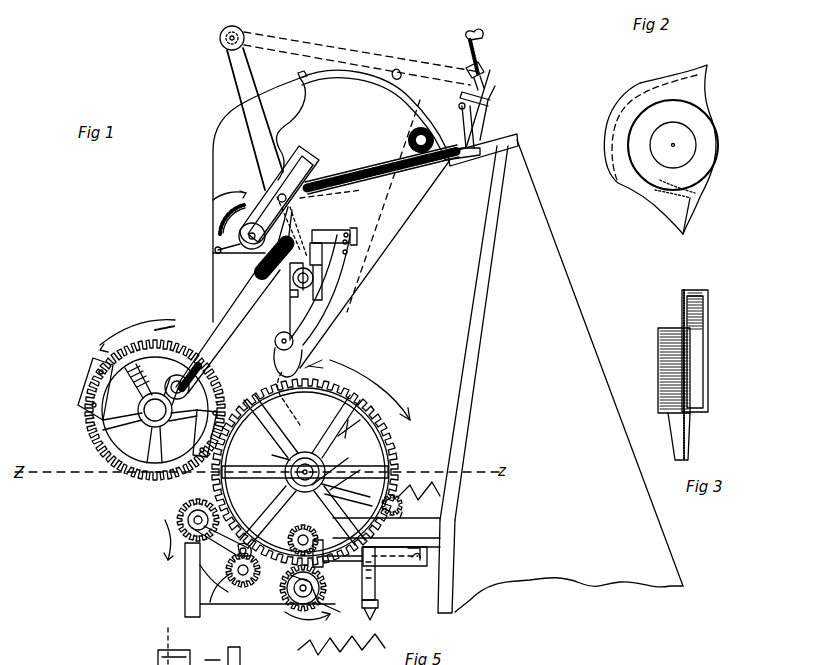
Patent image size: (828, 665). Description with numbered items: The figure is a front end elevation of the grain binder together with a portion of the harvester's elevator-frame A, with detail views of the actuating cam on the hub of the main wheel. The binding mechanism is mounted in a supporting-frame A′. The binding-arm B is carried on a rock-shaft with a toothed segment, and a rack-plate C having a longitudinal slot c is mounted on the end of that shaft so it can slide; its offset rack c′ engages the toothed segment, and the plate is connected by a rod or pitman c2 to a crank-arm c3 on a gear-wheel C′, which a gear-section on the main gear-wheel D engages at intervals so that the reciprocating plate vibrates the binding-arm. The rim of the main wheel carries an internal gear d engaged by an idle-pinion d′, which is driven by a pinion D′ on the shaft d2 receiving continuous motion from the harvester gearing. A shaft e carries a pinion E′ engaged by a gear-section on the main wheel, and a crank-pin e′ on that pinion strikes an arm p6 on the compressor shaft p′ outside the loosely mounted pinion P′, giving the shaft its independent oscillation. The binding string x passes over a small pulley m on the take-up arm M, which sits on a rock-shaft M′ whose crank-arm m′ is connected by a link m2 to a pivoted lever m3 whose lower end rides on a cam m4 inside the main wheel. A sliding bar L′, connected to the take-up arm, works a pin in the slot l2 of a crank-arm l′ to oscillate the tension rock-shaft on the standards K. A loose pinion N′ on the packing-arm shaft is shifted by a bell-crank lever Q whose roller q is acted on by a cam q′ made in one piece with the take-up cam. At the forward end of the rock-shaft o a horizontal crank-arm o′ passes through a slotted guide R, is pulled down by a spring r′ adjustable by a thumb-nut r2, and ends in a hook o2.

In FIG. 1, the elevator-frame A is at (434, 375).
In FIG. 1, the supporting-frame A′ is at (331, 223).
In FIG. 1, the binding-arm B is at (356, 84).
In FIG. 1, the rack-plate C is at (310, 185).
In FIG. 1, the longitudinal slot c is at (298, 170).
In FIG. 1, the rack c′ is at (327, 218).
In FIG. 1, the rod or pitman c2 is at (234, 300).
In FIG. 1, the crank-arm c3 is at (183, 392).
In FIG. 1, the gear-wheel C′ is at (147, 400).
In FIG. 1, the main gear-wheel D is at (396, 430).
In FIG. 1, the internal gear d is at (349, 430).
In FIG. 1, the idle-pinion d′ is at (292, 535).
In FIG. 1, the pinion D′ is at (322, 572).
In FIG. 1, the shaft d2 is at (300, 610).
In FIG. 1, the shaft e is at (222, 557).
In FIG. 1, the crank-arm e′ is at (225, 600).
In FIG. 1, the pinion E′ is at (238, 582).
In FIG. 1, the standards K is at (492, 125).
In FIG. 1, the crank-arm l′ is at (476, 58).
In FIG. 1, the slot l2 is at (468, 96).
In FIG. 1, the sliding bar L′ is at (470, 123).
In FIG. 1, the pulley m is at (222, 44).
In FIG. 1, the take-up arm M is at (262, 93).
In FIG. 1, the rock-shaft M′ is at (309, 284).
In FIG. 1, the crank-arm m′ is at (326, 258).
In FIG. 1, the link m2 is at (332, 231).
In FIG. 1, the pivoted lever m3 is at (333, 283).
In FIG. 1, the cam m4 is at (269, 455).
In FIG. 2, the cam m4 is at (684, 207).
In FIG. 3, the cam m4 is at (690, 445).
In FIG. 1, the loose pinion N′ is at (430, 484).
In FIG. 1, the rock-shaft o is at (416, 562).
In FIG. 1, the crank-arm o′ is at (375, 578).
In FIG. 1, the hook o2 is at (326, 566).
In FIG. 1, the pinion P′ is at (188, 520).
In FIG. 1, the shaft p′ is at (192, 524).
In FIG. 1, the arm p6 is at (200, 565).
In FIG. 1, the roller q is at (337, 467).
In FIG. 1, the cam q′ is at (318, 410).
In FIG. 2, the cam q′ is at (661, 149).
In FIG. 3, the cam q′ is at (698, 350).
In FIG. 1, the bell-crank lever Q is at (347, 494).
In FIG. 1, the guide R is at (389, 557).
In FIG. 1, the spring r′ is at (378, 600).
In FIG. 1, the thumb-nut r2 is at (372, 612).
In FIG. 1, the string x is at (164, 637).